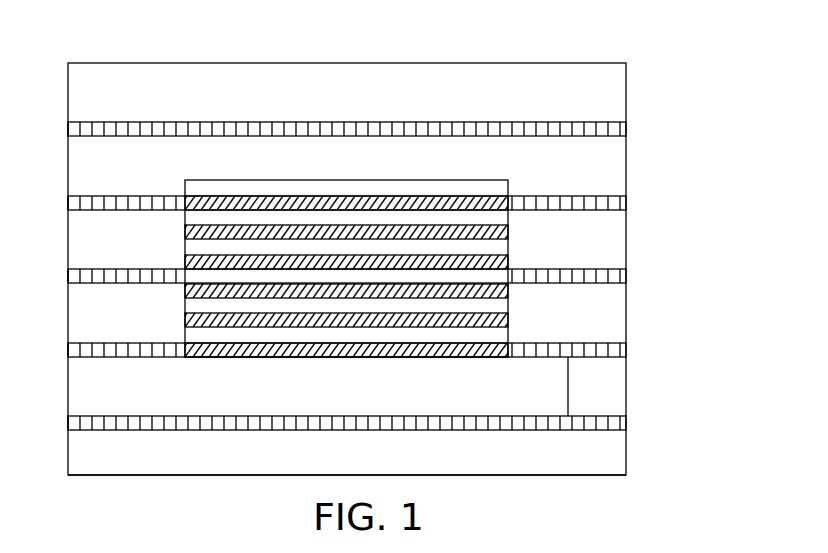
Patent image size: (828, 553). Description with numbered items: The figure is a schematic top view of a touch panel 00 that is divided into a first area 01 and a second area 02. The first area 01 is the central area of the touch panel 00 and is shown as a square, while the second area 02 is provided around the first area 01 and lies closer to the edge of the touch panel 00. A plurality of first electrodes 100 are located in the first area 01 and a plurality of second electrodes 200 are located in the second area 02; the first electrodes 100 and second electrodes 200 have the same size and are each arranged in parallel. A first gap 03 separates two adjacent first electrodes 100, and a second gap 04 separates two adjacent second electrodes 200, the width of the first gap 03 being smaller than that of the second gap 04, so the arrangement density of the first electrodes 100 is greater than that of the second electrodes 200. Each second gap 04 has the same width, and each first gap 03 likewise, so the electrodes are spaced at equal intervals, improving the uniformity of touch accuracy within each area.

The touch panel 00 is at (100, 50).
The second electrodes 200 is at (612, 129).
The first electrodes 100 is at (508, 197).
The first area 01 is at (510, 247).
The first gap 03 is at (490, 305).
The second gap 04 is at (578, 388).
The second area 02 is at (598, 462).